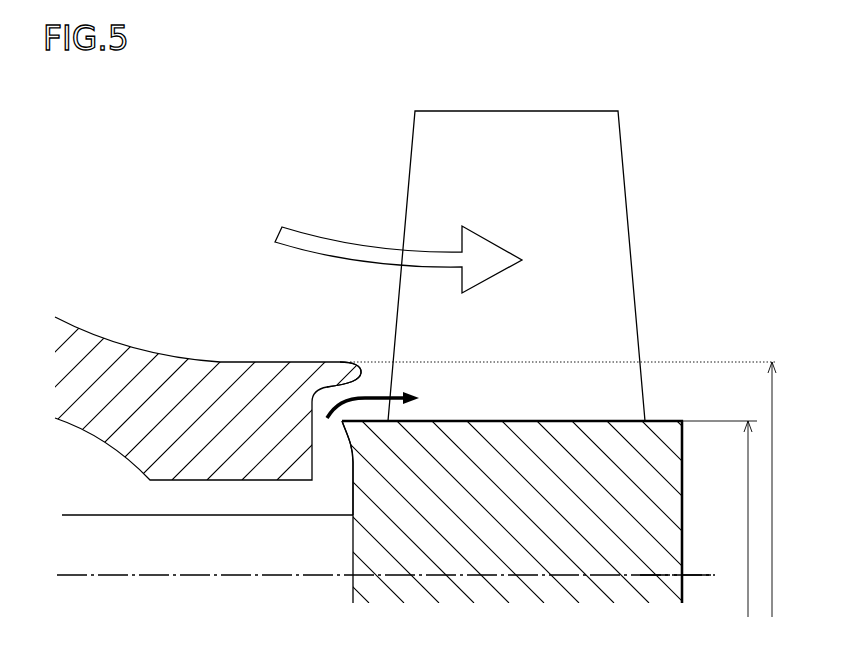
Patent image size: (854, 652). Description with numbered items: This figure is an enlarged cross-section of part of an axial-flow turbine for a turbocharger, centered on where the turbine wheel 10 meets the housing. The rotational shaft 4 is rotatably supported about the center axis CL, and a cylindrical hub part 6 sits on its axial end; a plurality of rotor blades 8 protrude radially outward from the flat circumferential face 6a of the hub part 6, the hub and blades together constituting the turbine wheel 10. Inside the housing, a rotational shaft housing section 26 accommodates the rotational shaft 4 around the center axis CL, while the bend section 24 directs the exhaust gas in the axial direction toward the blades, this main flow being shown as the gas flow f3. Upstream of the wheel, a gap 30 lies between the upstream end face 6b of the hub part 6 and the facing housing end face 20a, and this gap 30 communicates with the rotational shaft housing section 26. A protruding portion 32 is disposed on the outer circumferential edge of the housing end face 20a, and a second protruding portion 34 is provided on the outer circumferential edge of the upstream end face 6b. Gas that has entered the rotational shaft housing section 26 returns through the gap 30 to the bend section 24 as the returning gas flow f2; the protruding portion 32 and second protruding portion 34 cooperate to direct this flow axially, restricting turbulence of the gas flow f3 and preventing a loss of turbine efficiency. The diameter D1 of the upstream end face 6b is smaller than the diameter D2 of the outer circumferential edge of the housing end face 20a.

The rotational shaft 4 is at (218, 557).
The hub part 6 is at (492, 562).
The flat circumferential face 6a is at (627, 362).
The upstream end face 6b is at (352, 458).
The rotor blades 8 is at (610, 253).
The turbine wheel 10 is at (698, 465).
The housing end face 20a is at (313, 482).
The bend section 24 is at (222, 212).
The rotational shaft housing section 26 is at (108, 495).
The gap 30 is at (318, 448).
The protruding portion 32 is at (336, 360).
The second protruding portion 34 is at (352, 418).
The returning gas flow f2 is at (375, 391).
The gas flow f3 is at (325, 236).
The diameter of the upstream end face D1 is at (719, 519).
The diameter of the outer circumferential edge of the housing end face D2 is at (762, 489).
The center axis CL is at (701, 580).